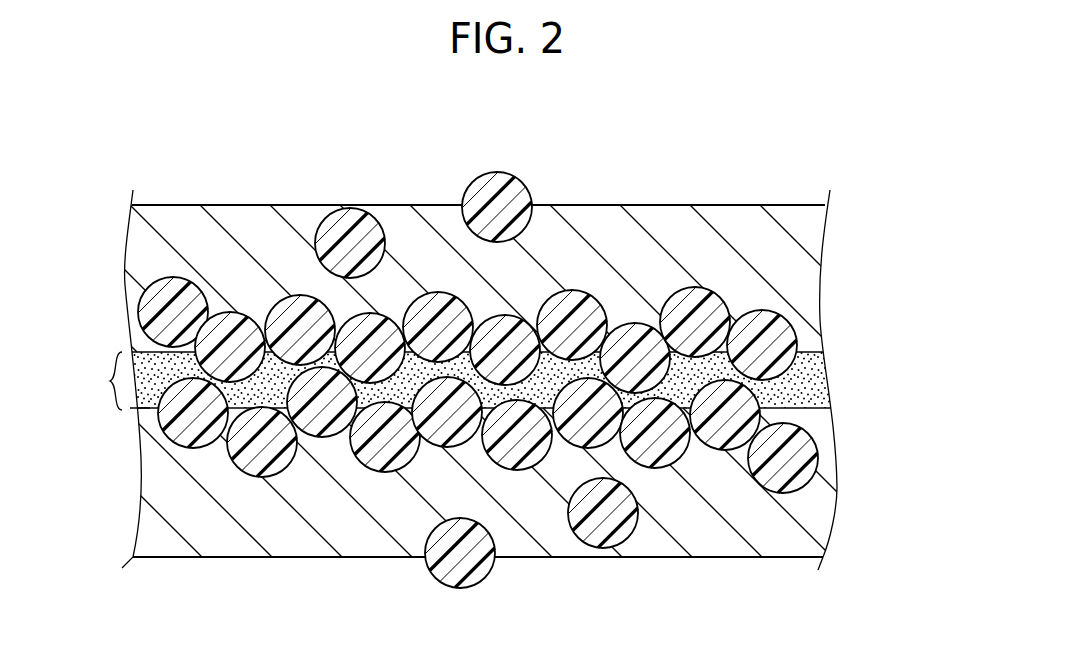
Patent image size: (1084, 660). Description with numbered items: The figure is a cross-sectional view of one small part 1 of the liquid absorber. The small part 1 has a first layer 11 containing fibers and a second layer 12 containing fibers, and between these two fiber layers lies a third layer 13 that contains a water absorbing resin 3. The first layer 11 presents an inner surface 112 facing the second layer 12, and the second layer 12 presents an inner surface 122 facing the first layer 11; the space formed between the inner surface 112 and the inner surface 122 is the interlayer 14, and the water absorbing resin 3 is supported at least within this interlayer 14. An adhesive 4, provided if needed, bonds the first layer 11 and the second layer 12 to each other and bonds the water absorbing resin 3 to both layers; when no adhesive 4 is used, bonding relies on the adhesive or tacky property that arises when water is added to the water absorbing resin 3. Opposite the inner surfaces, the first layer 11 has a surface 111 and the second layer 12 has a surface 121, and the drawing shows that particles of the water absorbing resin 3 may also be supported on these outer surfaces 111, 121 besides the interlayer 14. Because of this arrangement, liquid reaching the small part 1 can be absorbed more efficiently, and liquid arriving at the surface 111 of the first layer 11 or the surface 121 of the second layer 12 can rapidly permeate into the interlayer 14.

The small part 1 is at (822, 112).
The first layer 11 is at (822, 503).
The surface of the first layer 111 is at (780, 557).
The inner surface of the first layer 112 is at (822, 398).
The second layer 12 is at (805, 280).
The surface of the second layer 121 is at (781, 205).
The inner surface of the second layer 122 is at (826, 361).
The third layer 13 is at (858, 380).
The interlayer 14 is at (101, 381).
The water absorbing resin 3 is at (522, 182).
The adhesive 4 is at (138, 403).